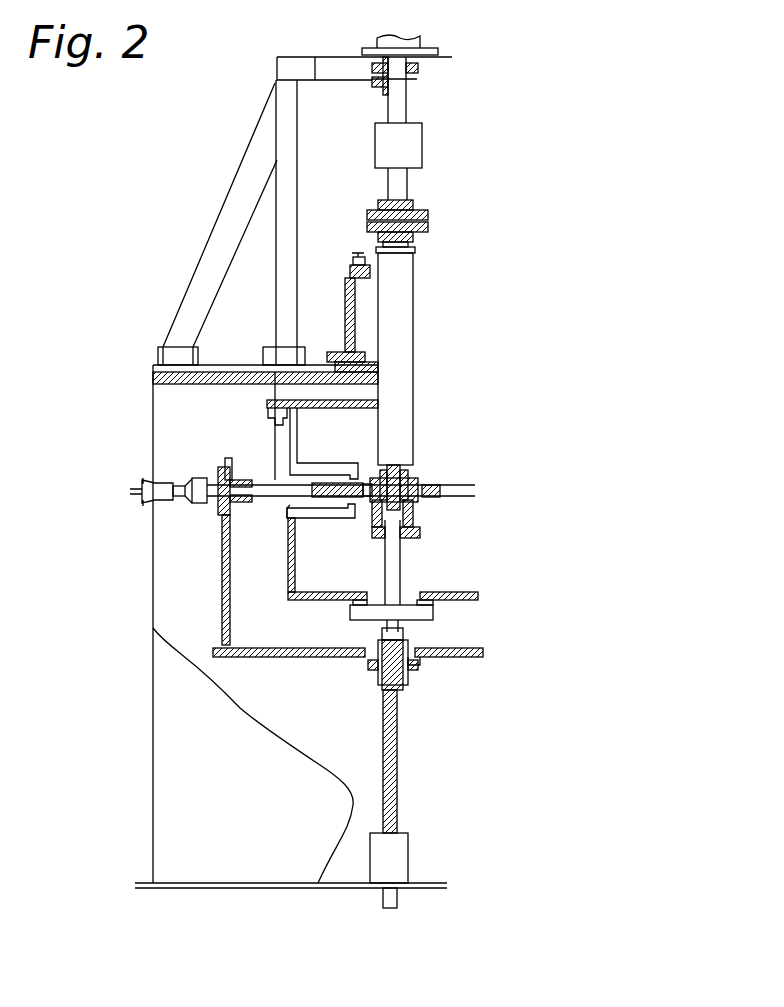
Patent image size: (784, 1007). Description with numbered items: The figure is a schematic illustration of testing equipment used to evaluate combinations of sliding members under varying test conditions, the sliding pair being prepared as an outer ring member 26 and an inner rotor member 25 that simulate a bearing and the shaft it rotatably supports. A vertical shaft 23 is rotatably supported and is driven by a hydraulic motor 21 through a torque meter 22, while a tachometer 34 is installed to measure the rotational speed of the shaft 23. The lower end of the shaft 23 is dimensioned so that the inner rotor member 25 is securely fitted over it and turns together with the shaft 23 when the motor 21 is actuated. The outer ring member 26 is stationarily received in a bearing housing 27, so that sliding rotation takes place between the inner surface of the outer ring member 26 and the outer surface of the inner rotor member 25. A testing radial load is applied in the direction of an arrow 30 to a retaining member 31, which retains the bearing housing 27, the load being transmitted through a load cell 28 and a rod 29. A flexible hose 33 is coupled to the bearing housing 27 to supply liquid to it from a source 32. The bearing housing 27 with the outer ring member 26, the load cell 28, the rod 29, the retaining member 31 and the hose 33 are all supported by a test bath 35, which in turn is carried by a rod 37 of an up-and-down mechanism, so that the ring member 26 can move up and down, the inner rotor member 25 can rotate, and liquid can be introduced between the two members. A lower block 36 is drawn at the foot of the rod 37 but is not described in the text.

The hydraulic motor 21 is at (425, 43).
The torque meter 22 is at (423, 146).
The vertical shaft 23 is at (412, 321).
The inner rotor member 25 is at (408, 520).
The outer ring member 26 is at (406, 480).
The bearing housing 27 is at (372, 525).
The load cell 28 is at (200, 503).
The rod 29 is at (265, 500).
The arrow 30 is at (107, 492).
The retaining member 31 is at (441, 482).
The source 32 is at (332, 616).
The flexible hose 33 is at (403, 565).
The tachometer 34 is at (357, 250).
The test bath 35 is at (268, 657).
The bearing block 36 is at (410, 852).
The rod of up-and-down mechanism 37 is at (400, 748).